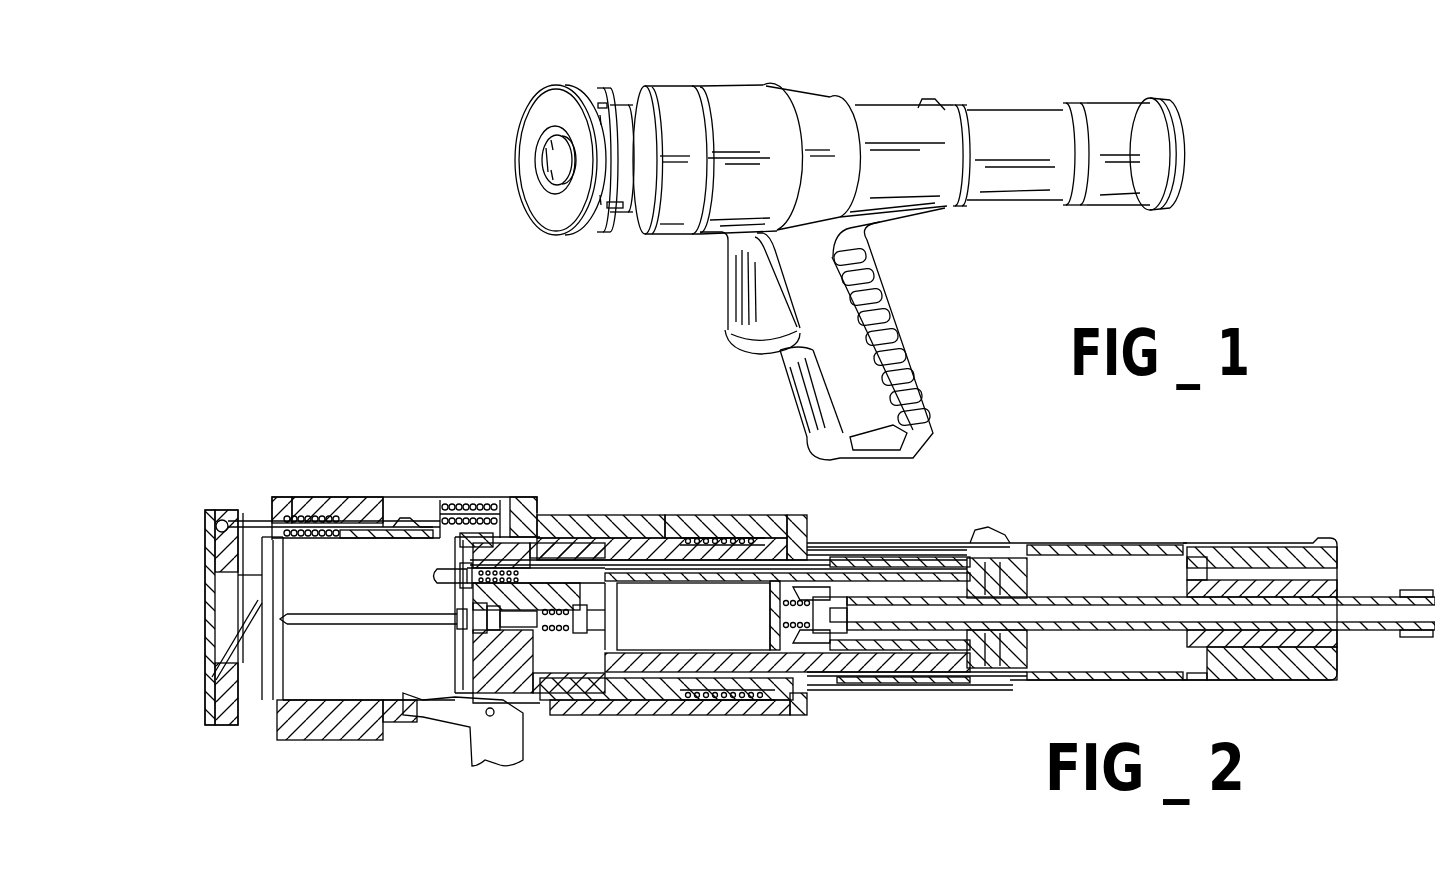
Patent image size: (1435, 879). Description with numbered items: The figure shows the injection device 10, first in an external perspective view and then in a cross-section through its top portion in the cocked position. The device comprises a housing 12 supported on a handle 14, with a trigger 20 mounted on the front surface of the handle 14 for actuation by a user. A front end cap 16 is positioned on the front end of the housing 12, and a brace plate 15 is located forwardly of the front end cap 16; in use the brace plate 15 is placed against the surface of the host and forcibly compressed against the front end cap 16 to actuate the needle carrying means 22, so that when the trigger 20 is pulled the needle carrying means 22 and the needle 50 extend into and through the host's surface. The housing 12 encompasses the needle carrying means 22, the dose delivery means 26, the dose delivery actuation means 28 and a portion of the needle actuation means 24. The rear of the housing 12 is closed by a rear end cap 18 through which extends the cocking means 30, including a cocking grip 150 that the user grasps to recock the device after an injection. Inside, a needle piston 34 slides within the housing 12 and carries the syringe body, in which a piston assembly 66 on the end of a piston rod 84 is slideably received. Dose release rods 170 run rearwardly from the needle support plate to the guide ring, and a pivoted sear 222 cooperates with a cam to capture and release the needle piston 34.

In FIG. 1, the injection device 10 is at (995, 84).
In FIG. 1, the housing 12 is at (724, 86).
In FIG. 2, the housing 12 is at (572, 517).
In FIG. 1, the handle 14 is at (862, 372).
In FIG. 1, the brace plate 15 is at (532, 122).
In FIG. 2, the brace plate 15 is at (232, 713).
In FIG. 1, the front end cap 16 is at (652, 100).
In FIG. 2, the front end cap 16 is at (356, 496).
In FIG. 1, the rear end cap 18 is at (800, 95).
In FIG. 2, the rear end cap 18 is at (730, 515).
In FIG. 1, the trigger 20 is at (742, 290).
In FIG. 2, the trigger 20 is at (512, 746).
In FIG. 2, the needle carrying means 22 is at (446, 642).
In FIG. 2, the needle actuation means 24 is at (248, 503).
In FIG. 2, the dose delivery means 26 is at (760, 625).
In FIG. 2, the dose delivery actuation means 28 is at (420, 573).
In FIG. 2, the cocking means 30 is at (1206, 684).
In FIG. 2, the needle piston 34 is at (623, 545).
In FIG. 2, the needle 50 is at (350, 620).
In FIG. 2, the piston assembly 66 is at (792, 640).
In FIG. 2, the piston rod 84 is at (1073, 596).
In FIG. 1, the cocking grip 150 is at (1113, 120).
In FIG. 2, the cocking grip 150 is at (1240, 555).
In FIG. 2, the dose release rod 170 is at (882, 572).
In FIG. 2, the sear 222 is at (472, 504).